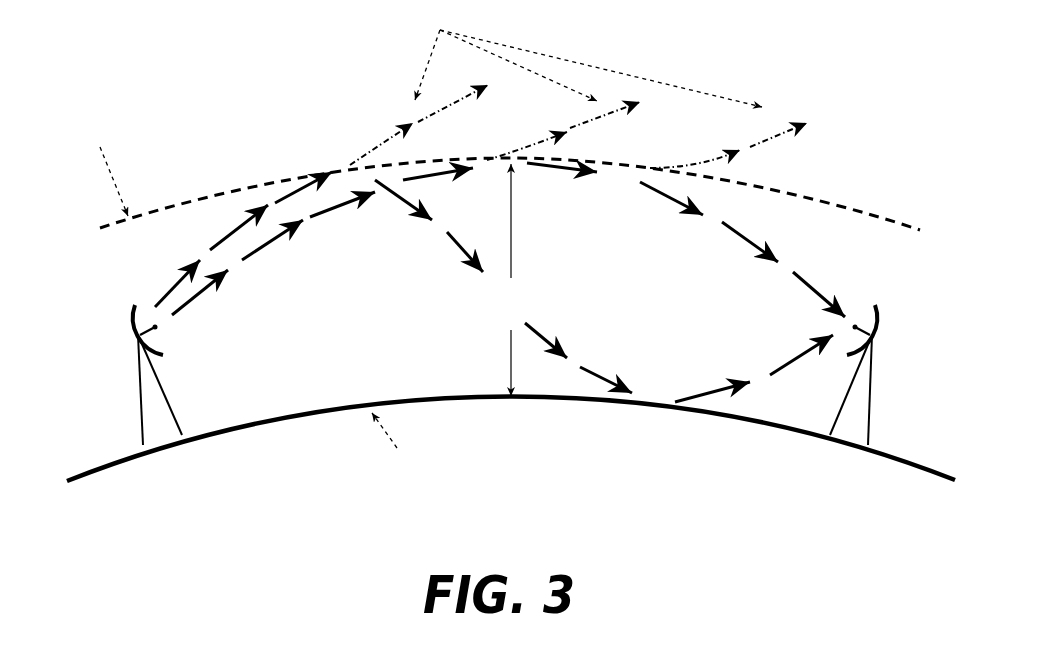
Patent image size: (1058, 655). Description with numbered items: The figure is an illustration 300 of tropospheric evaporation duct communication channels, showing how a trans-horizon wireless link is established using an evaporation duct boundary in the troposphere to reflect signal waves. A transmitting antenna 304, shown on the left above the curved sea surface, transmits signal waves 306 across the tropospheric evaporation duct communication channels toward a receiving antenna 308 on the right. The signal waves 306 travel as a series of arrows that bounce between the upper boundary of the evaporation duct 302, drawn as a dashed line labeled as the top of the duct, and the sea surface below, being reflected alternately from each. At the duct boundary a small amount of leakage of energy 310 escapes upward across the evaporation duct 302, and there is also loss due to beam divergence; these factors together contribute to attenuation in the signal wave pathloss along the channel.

The illustration 300 is at (753, 559).
The evaporation duct 302 is at (838, 193).
The transmitting antenna 304 is at (137, 372).
The signal waves 306 is at (415, 212).
The receiving antenna 308 is at (868, 384).
The leakage of energy 310 is at (712, 100).